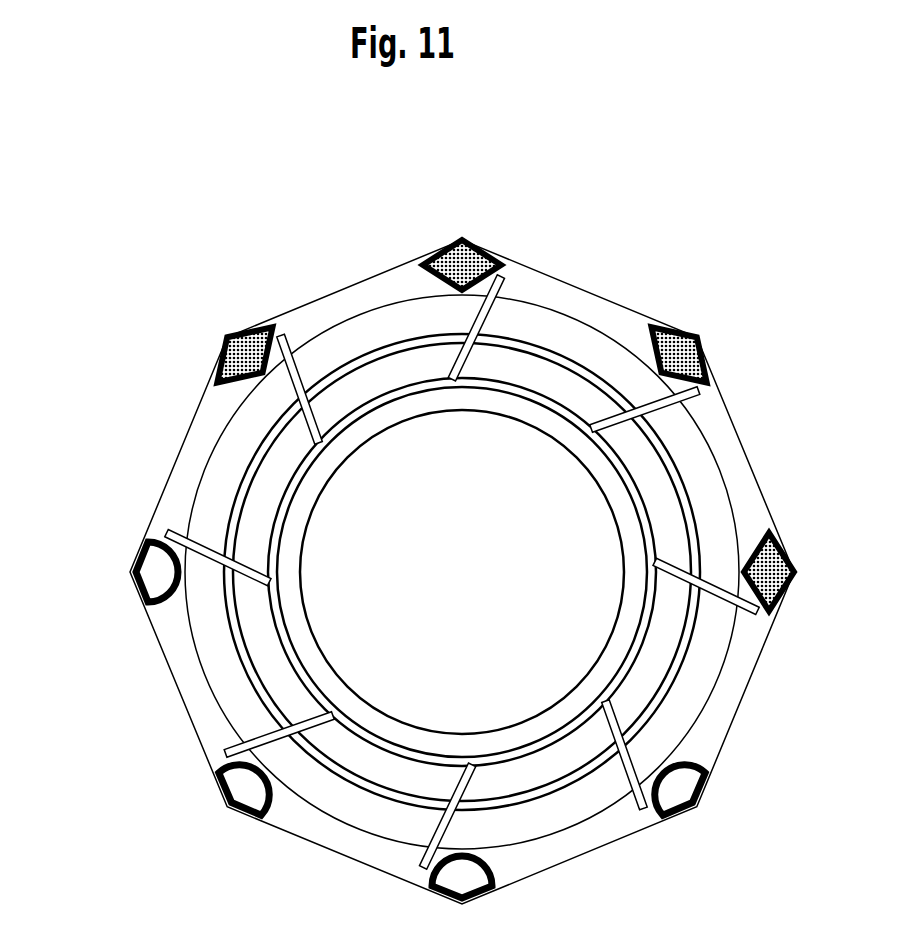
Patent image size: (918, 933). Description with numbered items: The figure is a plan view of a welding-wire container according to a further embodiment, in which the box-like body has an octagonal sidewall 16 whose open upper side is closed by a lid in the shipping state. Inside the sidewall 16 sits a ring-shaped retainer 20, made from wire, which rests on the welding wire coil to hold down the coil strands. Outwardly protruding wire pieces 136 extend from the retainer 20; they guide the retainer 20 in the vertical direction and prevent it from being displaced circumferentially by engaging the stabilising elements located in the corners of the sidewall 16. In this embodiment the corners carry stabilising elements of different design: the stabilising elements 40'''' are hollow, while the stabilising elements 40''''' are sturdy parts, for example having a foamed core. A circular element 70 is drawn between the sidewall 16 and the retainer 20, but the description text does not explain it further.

The octagonal sidewall 16 is at (577, 288).
The outer ring 70 is at (710, 475).
The retainer 20 is at (372, 345).
The wire pieces 136 is at (300, 378).
The stabilising elements 40''''' is at (505, 373).
The stabilising elements 40'''' is at (431, 695).